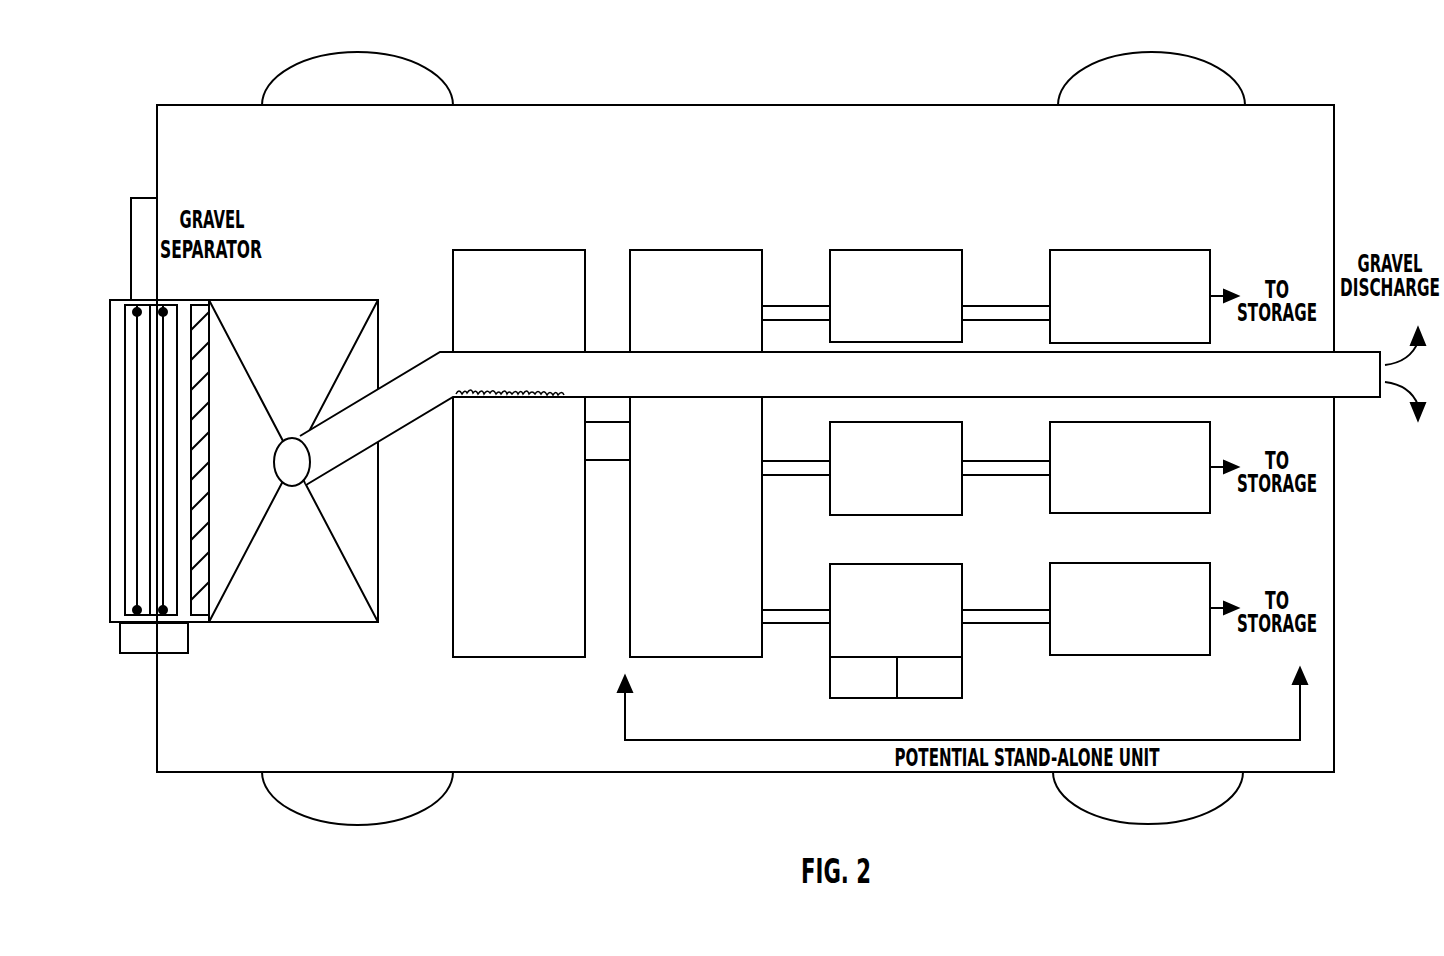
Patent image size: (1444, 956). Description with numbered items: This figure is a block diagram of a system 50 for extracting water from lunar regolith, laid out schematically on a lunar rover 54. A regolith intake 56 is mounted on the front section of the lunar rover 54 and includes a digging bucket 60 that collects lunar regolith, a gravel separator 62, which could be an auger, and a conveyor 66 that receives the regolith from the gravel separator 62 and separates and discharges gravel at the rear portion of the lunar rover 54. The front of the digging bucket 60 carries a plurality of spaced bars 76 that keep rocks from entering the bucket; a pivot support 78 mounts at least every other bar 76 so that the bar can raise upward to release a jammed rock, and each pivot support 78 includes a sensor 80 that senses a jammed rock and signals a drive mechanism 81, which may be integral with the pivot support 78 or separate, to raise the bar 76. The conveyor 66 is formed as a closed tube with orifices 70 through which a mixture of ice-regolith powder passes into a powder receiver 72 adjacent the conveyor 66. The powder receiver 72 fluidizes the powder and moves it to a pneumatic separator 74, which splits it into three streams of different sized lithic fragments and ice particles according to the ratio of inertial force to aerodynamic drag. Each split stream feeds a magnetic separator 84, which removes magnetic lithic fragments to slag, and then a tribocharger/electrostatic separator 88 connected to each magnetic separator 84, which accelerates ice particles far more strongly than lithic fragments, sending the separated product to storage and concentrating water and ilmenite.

The system for extracting water from lunar regolith 50 is at (838, 55).
The lunar rover 54 is at (868, 105).
The regolith intake 56 is at (380, 153).
The digging bucket 60 is at (345, 330).
The gravel separator 62 is at (202, 313).
The conveyor 66 is at (407, 422).
The orifices 70 is at (487, 397).
The powder receiver 72 is at (520, 250).
The pneumatic separator 74 is at (695, 250).
The spaced bars 76 is at (148, 342).
The pivot support 78 is at (163, 608).
The sensor 80 is at (190, 637).
The drive mechanism 81 is at (150, 197).
The magnetic separator 84 is at (895, 250).
The tribocharger/electrostatic separator 88 is at (1130, 250).